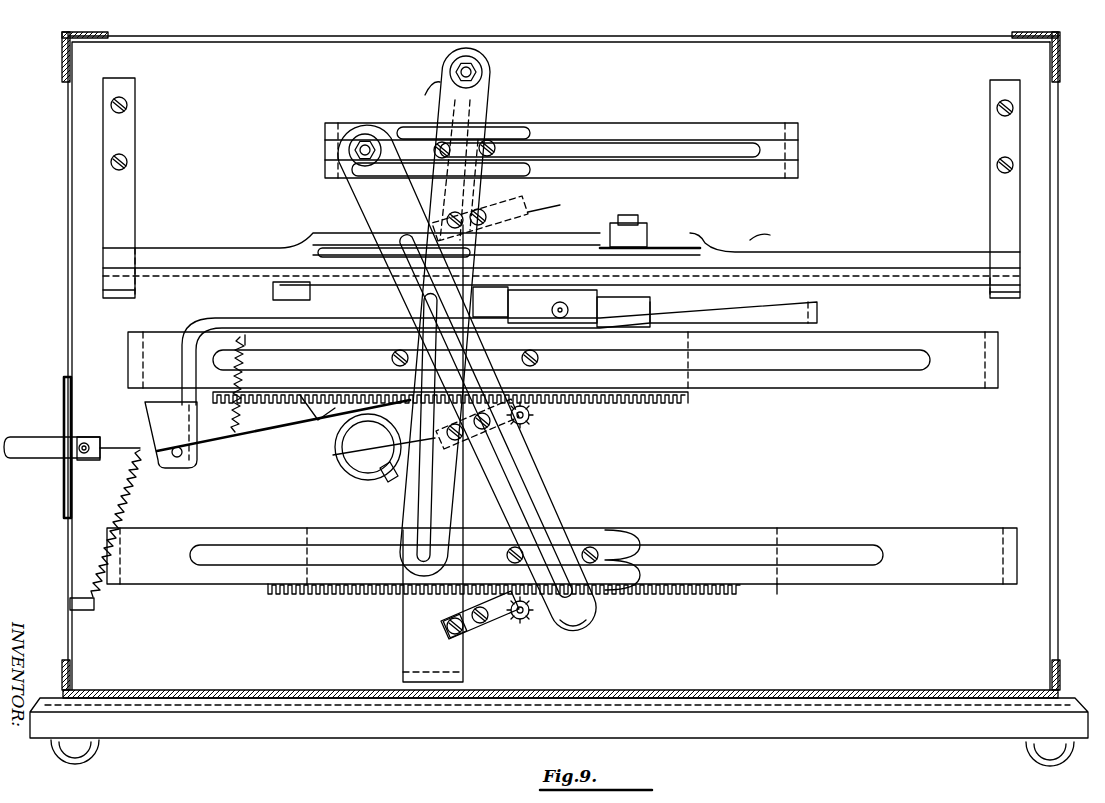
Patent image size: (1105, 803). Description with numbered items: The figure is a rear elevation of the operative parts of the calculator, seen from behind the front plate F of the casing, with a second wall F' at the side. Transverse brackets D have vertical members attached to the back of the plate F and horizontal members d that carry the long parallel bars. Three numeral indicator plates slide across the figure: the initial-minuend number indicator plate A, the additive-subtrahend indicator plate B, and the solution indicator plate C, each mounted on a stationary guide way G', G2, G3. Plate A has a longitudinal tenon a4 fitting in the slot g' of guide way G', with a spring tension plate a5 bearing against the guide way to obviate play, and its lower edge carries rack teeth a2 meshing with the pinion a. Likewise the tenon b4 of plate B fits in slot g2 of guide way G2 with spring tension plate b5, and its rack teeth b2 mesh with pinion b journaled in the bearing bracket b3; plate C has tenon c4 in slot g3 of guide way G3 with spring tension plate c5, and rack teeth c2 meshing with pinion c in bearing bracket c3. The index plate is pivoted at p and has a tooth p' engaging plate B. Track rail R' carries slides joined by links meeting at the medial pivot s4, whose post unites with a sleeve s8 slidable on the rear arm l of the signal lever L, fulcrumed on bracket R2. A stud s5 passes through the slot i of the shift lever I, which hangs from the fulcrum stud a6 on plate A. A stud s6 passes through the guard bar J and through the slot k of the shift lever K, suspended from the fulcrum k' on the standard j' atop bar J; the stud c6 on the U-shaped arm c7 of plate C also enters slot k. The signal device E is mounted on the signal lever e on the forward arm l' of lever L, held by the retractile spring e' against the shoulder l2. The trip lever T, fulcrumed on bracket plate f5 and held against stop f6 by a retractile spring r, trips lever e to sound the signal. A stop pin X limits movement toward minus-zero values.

The front plate F is at (559, 399).
The frame side wall F' is at (981, 361).
The transverse brackets D is at (559, 188).
The horizontal members d is at (94, 292).
The initial-minuend number indicator plate A is at (316, 151).
The guide way G' is at (561, 127).
The slot g' is at (639, 146).
The spring tension plate a5 is at (520, 125).
The longitudinal tenon a4 is at (540, 160).
The fulcrum stud a6 is at (372, 145).
The rack teeth a2 is at (440, 228).
The pinion a is at (555, 212).
The pivot p is at (546, 217).
The shift lever K is at (397, 508).
The fulcrum k' is at (495, 72).
The longitudinal slot k is at (393, 428).
The standard j' is at (594, 149).
The shift lever I is at (559, 468).
The slot i is at (537, 508).
The U-shaped arm c7 is at (433, 453).
The bearing bracket c3 is at (505, 636).
The pinion c is at (528, 622).
The longitudinal tenon c4 is at (620, 585).
The spring tension plate c5 is at (606, 528).
The stud c6 is at (400, 474).
The guide way G3 is at (562, 556).
The longitudinal slot g3 is at (200, 560).
The solution indicator plate C is at (773, 590).
The rack teeth c2 is at (722, 595).
The guide way G2 is at (945, 345).
The slot g2 is at (310, 372).
The longitudinal tenon b4 is at (334, 363).
The additive-subtrahend indicator plate B is at (692, 400).
The pinion b is at (541, 415).
The rack teeth b2 is at (320, 425).
The bearing bracket b3 is at (500, 440).
The spring tension plate b5 is at (475, 305).
The signal device E is at (384, 447).
The signal lever e is at (283, 431).
The retractile spring e' is at (222, 387).
The signal lever L is at (212, 313).
The rear arm l is at (729, 314).
The forward arm l' is at (246, 318).
The shoulder l2 is at (198, 455).
The signal lever T is at (35, 425).
The stop f6 is at (50, 458).
The bracket plate f5 is at (62, 380).
The spring r is at (128, 500).
The guard bar J is at (818, 264).
The bracket R2 is at (300, 268).
The track rail R' is at (855, 241).
The stud s5 is at (370, 250).
The stud s6 is at (450, 258).
The medial pivot s4 is at (650, 246).
The nut X is at (650, 235).
The tooth p' is at (552, 306).
The sleeve s8 is at (640, 312).